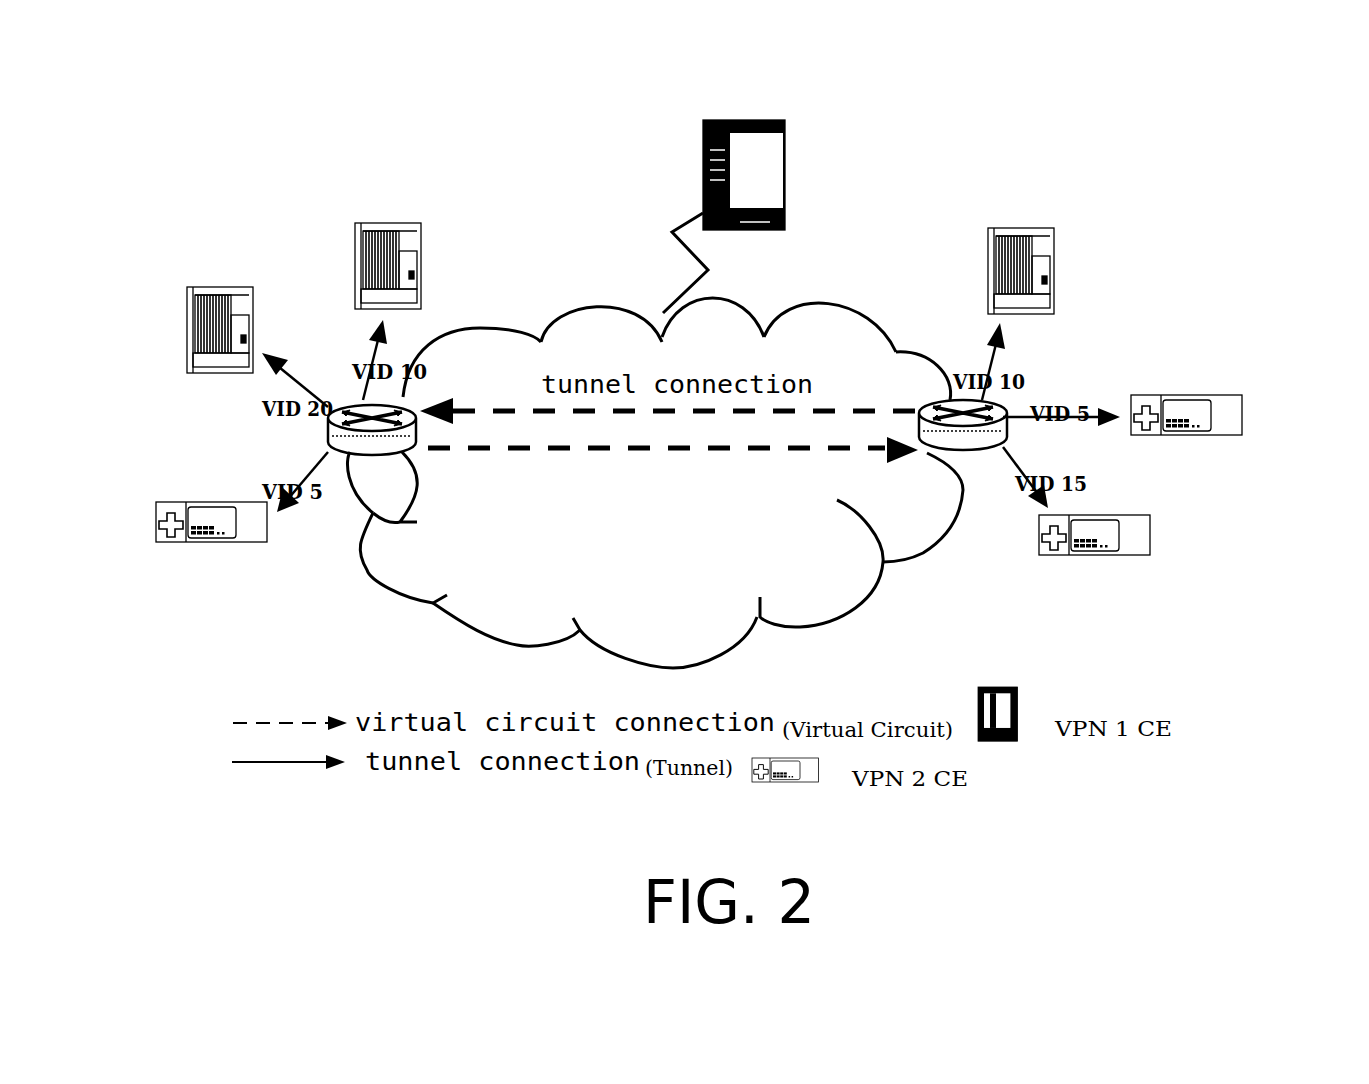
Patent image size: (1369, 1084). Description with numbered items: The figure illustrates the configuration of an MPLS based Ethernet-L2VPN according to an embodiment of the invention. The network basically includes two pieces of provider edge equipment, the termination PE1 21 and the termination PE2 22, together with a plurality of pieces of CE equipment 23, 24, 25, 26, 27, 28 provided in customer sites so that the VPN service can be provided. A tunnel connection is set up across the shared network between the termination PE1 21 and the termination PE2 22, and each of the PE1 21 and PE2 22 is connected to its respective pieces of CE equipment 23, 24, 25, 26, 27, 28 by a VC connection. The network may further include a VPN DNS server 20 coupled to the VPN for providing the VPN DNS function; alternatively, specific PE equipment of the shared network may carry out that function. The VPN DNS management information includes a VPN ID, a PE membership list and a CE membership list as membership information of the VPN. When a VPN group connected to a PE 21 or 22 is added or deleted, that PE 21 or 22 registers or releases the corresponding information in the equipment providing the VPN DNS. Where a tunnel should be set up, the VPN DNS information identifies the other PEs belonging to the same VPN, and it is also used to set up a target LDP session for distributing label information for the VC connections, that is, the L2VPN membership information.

The VPN DNS server 20 is at (773, 162).
The PE1 equipment 21 is at (417, 518).
The PE2 equipment 22 is at (992, 428).
The CE equipment 23 is at (363, 258).
The CE equipment 24 is at (193, 323).
The CE equipment 25 is at (160, 540).
The CE equipment 26 is at (1047, 265).
The CE equipment 27 is at (1230, 413).
The CE equipment 28 is at (1140, 533).